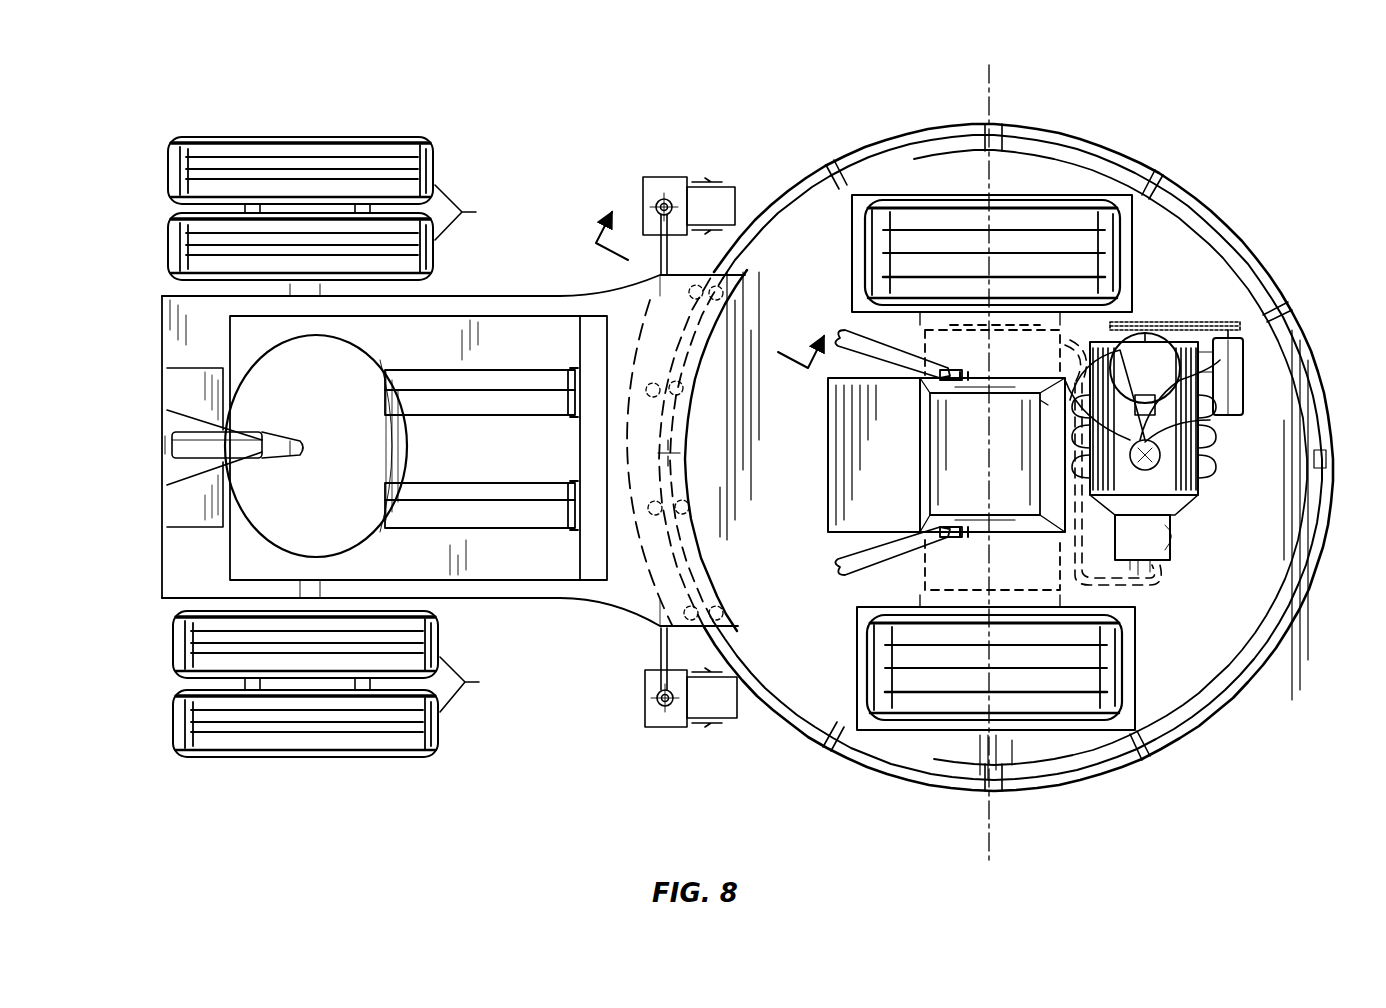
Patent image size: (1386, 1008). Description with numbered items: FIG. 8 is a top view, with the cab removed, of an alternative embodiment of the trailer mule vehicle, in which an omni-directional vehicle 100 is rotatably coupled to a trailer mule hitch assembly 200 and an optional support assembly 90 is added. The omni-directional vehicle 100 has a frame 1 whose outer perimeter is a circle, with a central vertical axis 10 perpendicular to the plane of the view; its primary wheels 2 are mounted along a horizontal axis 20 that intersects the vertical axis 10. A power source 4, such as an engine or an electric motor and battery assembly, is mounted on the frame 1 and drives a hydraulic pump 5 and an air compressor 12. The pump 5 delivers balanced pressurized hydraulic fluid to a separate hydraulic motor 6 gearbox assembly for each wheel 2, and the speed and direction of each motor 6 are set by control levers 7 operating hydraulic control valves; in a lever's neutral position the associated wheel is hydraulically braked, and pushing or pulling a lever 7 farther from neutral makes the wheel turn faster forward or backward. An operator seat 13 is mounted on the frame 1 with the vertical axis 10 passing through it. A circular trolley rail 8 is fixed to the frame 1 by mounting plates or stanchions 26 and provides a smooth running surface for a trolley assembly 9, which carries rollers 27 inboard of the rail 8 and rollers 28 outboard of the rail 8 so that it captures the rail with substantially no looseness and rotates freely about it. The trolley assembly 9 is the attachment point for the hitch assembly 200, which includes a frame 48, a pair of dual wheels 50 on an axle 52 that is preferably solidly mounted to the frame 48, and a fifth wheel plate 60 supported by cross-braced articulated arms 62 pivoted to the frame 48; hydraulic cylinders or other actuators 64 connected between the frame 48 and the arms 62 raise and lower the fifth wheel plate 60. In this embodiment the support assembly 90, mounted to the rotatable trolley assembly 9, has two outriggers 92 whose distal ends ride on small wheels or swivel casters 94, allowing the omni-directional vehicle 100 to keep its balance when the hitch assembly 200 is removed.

The frame 1 is at (1180, 252).
The primary wheels 2 is at (1082, 205).
The power source 4 is at (1205, 452).
The hydraulic pump 5 is at (1170, 528).
The hydraulic motor 6 is at (973, 353).
The control levers 7 is at (850, 337).
The trolley rail 8 is at (935, 797).
The trolley assembly 9 is at (676, 447).
The central vertical axis 10 is at (990, 452).
The air compressor 12 is at (1228, 350).
The seat 13 is at (935, 467).
The horizontal axis 20 is at (986, 92).
The mounting plates 26 is at (1283, 312).
The inboard rollers 27 is at (722, 620).
The outboard rollers 28 is at (676, 396).
The hitch assembly frame 48 is at (620, 600).
The dual wheels 50 is at (339, 447).
The axle 52 is at (252, 600).
The fifth wheel plate 60 is at (268, 556).
The articulated arms 62 is at (500, 408).
The actuators 64 is at (240, 430).
The support assembly 90 is at (664, 458).
The outriggers 92 is at (660, 262).
The swivel casters 94 is at (720, 192).
The omni-directional vehicle 100 is at (1035, 449).
The trailer mule hitch assembly 200 is at (479, 449).